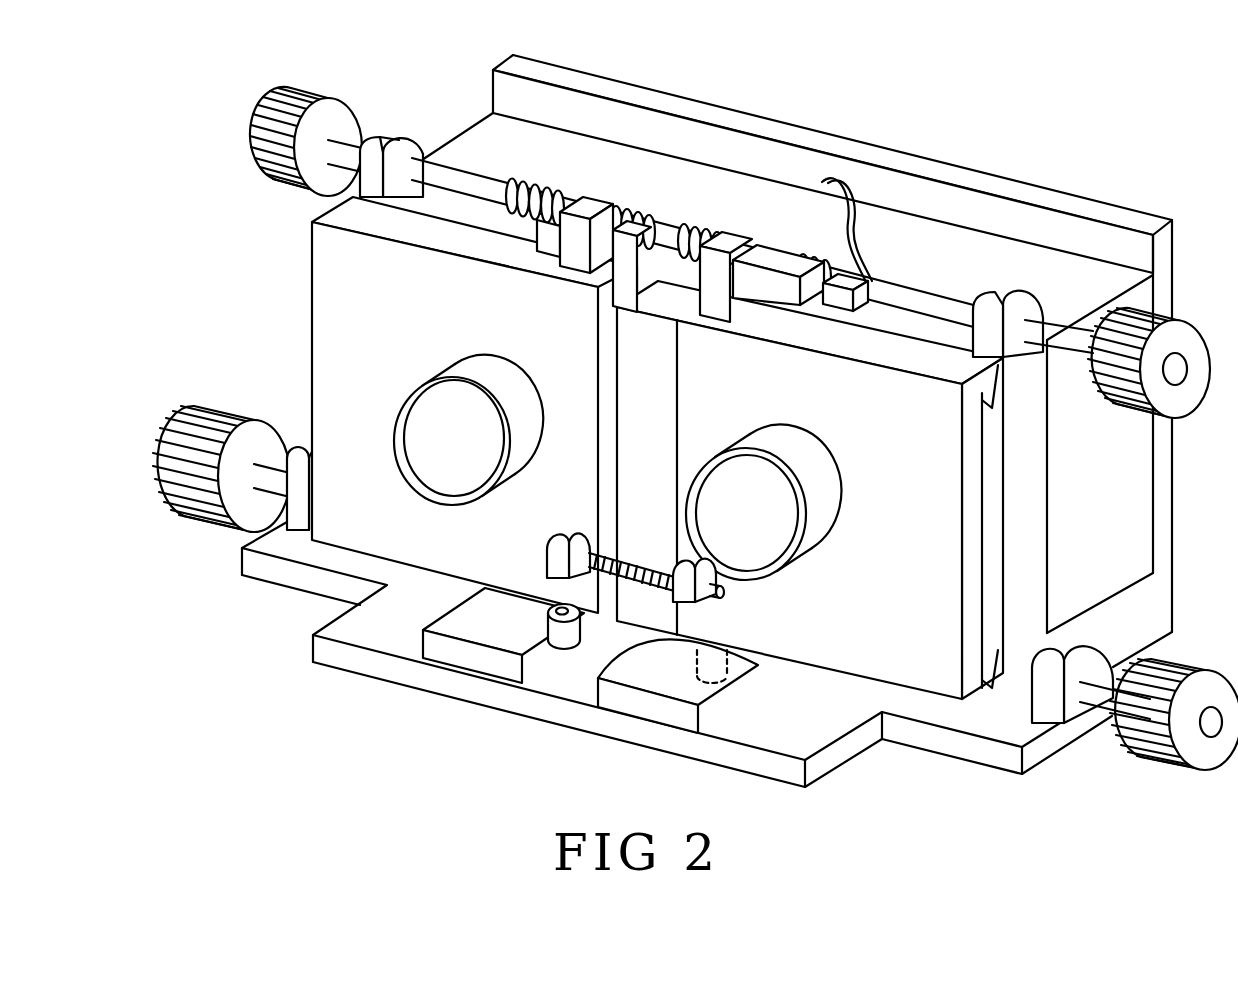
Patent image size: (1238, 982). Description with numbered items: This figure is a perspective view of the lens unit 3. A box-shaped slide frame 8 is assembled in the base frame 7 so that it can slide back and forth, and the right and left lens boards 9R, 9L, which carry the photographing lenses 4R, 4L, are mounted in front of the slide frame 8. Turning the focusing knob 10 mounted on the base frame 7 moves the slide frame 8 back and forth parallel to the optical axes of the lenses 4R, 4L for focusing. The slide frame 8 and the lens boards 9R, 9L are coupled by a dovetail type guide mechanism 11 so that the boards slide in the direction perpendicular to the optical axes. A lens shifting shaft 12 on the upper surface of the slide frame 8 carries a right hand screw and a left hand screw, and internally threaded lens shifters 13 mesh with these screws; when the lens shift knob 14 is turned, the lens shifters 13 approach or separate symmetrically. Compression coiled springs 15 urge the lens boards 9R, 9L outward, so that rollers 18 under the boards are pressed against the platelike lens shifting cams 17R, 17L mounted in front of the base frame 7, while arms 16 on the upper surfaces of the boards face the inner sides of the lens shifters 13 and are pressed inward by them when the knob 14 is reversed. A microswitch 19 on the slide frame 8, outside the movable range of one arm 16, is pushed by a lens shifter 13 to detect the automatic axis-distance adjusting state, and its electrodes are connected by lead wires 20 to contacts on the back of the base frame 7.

The lens unit 3 is at (767, 96).
The photographing lens 4R is at (403, 402).
The photographing lens 4L is at (817, 560).
The base frame 7 is at (370, 665).
The slide frame 8 is at (1027, 515).
The lens board 9R is at (330, 278).
The lens board 9L is at (933, 690).
The focusing knob 10 is at (1177, 670).
The dovetail type guide mechanism 11 is at (998, 648).
The lens shifting shaft 12 is at (938, 305).
The lens shifter 13 is at (587, 202).
The lens shift knob 14 is at (1183, 327).
The compression coiled spring 15 is at (607, 600).
The arm 16 is at (632, 227).
The lens shifting cam 17R is at (482, 657).
The lens shifting cam 17L is at (652, 712).
The roller 18 is at (560, 638).
The microswitch 19 is at (872, 262).
The lead wire 20 is at (850, 205).